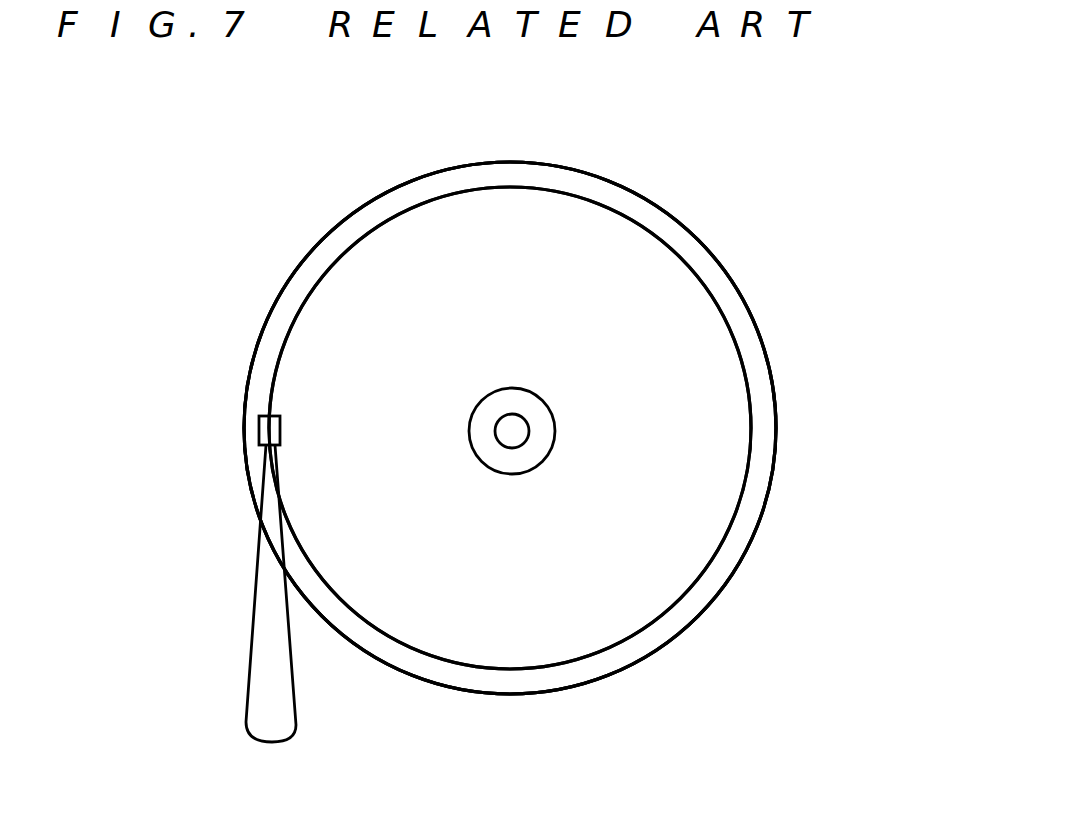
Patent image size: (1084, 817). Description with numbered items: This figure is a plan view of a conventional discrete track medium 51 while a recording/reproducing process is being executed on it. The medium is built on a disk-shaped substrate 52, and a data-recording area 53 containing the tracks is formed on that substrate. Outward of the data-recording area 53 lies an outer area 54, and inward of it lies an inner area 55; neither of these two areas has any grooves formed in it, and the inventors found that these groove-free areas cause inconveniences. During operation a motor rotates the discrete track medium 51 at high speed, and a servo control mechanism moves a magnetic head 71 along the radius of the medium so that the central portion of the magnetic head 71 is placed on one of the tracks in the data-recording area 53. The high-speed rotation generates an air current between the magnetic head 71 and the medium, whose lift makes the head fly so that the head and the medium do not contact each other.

The discrete track medium 51 is at (722, 207).
The disk-shaped substrate 52 is at (741, 290).
The data-recording area 53 is at (707, 400).
The outer area 54 is at (760, 467).
The inner area 55 is at (509, 398).
The magnetic head 71 is at (259, 428).